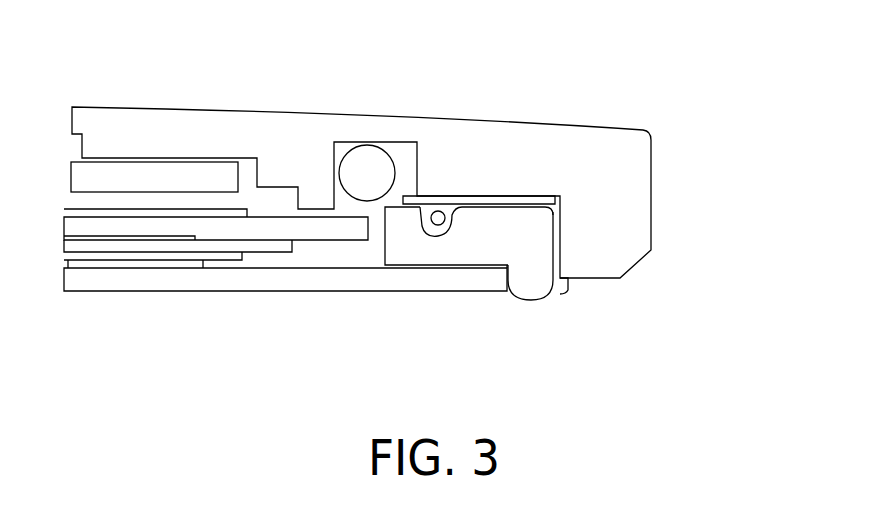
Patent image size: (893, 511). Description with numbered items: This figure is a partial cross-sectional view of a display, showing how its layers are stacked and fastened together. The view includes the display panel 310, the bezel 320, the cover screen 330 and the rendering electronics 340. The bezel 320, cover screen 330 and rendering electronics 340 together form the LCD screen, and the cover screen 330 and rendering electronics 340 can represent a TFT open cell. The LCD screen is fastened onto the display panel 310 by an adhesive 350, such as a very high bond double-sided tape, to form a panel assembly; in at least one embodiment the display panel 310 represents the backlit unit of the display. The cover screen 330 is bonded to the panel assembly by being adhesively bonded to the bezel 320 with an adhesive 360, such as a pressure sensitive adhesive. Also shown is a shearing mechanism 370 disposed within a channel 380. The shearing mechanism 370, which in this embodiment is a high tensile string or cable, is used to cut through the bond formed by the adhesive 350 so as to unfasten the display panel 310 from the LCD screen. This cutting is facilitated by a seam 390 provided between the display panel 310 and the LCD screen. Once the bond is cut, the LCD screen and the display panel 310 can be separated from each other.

The display panel 310 is at (637, 161).
The bezel 320 is at (533, 297).
The cover screen 330 is at (435, 283).
The rendering electronics 340 is at (83, 229).
The adhesive 350 is at (560, 197).
The adhesive 360 is at (392, 266).
The shearing mechanism 370 is at (442, 208).
The channel 380 is at (430, 228).
The seam 390 is at (570, 292).